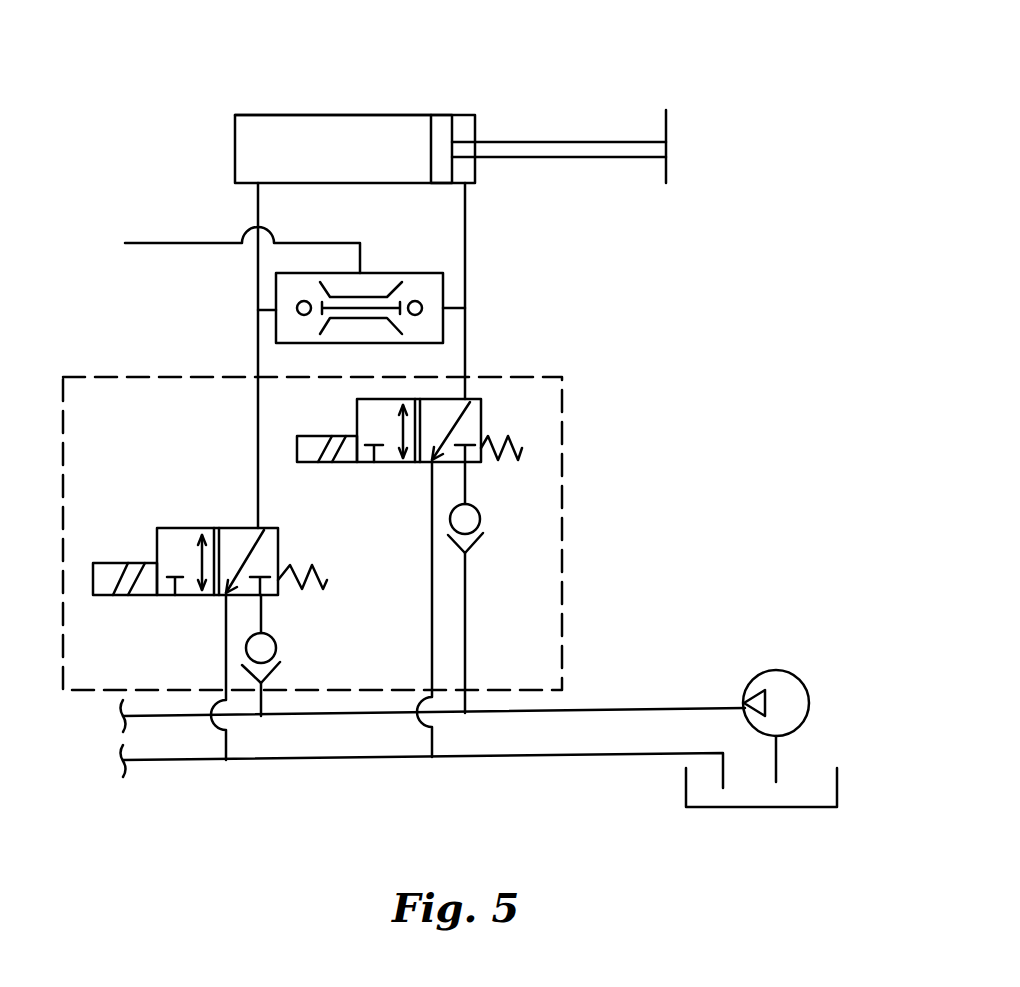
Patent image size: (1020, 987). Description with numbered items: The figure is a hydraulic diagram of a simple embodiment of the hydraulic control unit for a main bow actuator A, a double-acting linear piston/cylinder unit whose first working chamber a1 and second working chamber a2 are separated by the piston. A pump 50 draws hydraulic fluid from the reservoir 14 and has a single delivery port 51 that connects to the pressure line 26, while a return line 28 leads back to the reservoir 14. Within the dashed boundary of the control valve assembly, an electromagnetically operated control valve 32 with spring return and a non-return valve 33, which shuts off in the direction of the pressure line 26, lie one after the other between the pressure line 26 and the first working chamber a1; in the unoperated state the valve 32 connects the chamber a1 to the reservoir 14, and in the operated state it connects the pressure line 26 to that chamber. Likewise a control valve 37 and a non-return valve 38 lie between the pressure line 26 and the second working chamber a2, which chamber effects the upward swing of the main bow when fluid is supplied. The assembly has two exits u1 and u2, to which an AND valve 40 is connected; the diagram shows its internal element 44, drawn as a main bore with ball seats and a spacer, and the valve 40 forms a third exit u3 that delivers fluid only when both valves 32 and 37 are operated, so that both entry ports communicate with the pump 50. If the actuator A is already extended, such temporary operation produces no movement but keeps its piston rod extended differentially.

The main bow actuator A is at (450, 95).
The first working chamber a1 is at (470, 128).
The second working chamber a2 is at (310, 144).
The first exit u1 is at (233, 355).
The second exit u2 is at (492, 291).
The third exit u3 is at (239, 240).
The AND valve 40 is at (383, 275).
The flow restrictor 44 is at (363, 262).
The control valve 32 is at (483, 413).
The non-return valve 33 is at (490, 520).
The control valve 37 is at (184, 528).
The non-return valve 38 is at (280, 643).
The pressure line 26 is at (597, 707).
The return line 28 is at (558, 755).
The pump 50 is at (800, 699).
The delivery port 51 is at (742, 704).
The reservoir 14 is at (810, 808).